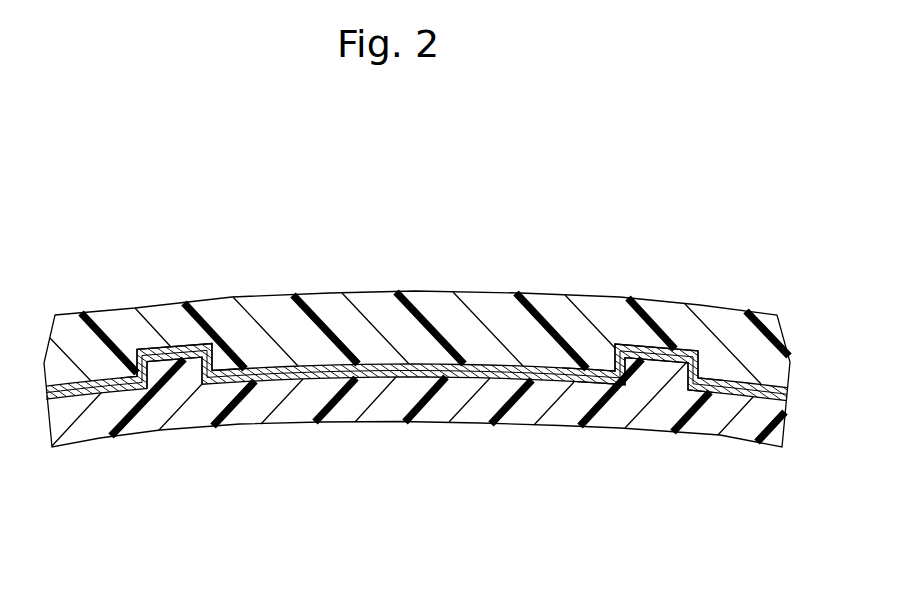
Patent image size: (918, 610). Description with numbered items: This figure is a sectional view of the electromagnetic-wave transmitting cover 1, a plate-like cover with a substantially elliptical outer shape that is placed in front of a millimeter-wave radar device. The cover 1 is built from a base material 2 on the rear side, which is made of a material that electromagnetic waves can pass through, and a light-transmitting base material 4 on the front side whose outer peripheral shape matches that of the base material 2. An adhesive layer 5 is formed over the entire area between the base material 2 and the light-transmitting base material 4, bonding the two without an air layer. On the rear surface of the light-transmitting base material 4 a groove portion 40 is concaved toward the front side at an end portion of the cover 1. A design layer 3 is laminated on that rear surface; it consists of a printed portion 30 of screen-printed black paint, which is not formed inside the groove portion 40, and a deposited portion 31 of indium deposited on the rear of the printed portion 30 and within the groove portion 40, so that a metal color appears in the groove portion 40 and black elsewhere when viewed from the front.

The electromagnetic-wave transmitting cover 1 is at (157, 253).
The base material 2 is at (313, 424).
The design layer 3 is at (642, 253).
The printed portion 30 is at (595, 368).
The deposited portion 31 is at (676, 345).
The light-transmitting base material 4 is at (417, 308).
The groove portion 40 is at (155, 346).
The adhesive layer 5 is at (597, 375).